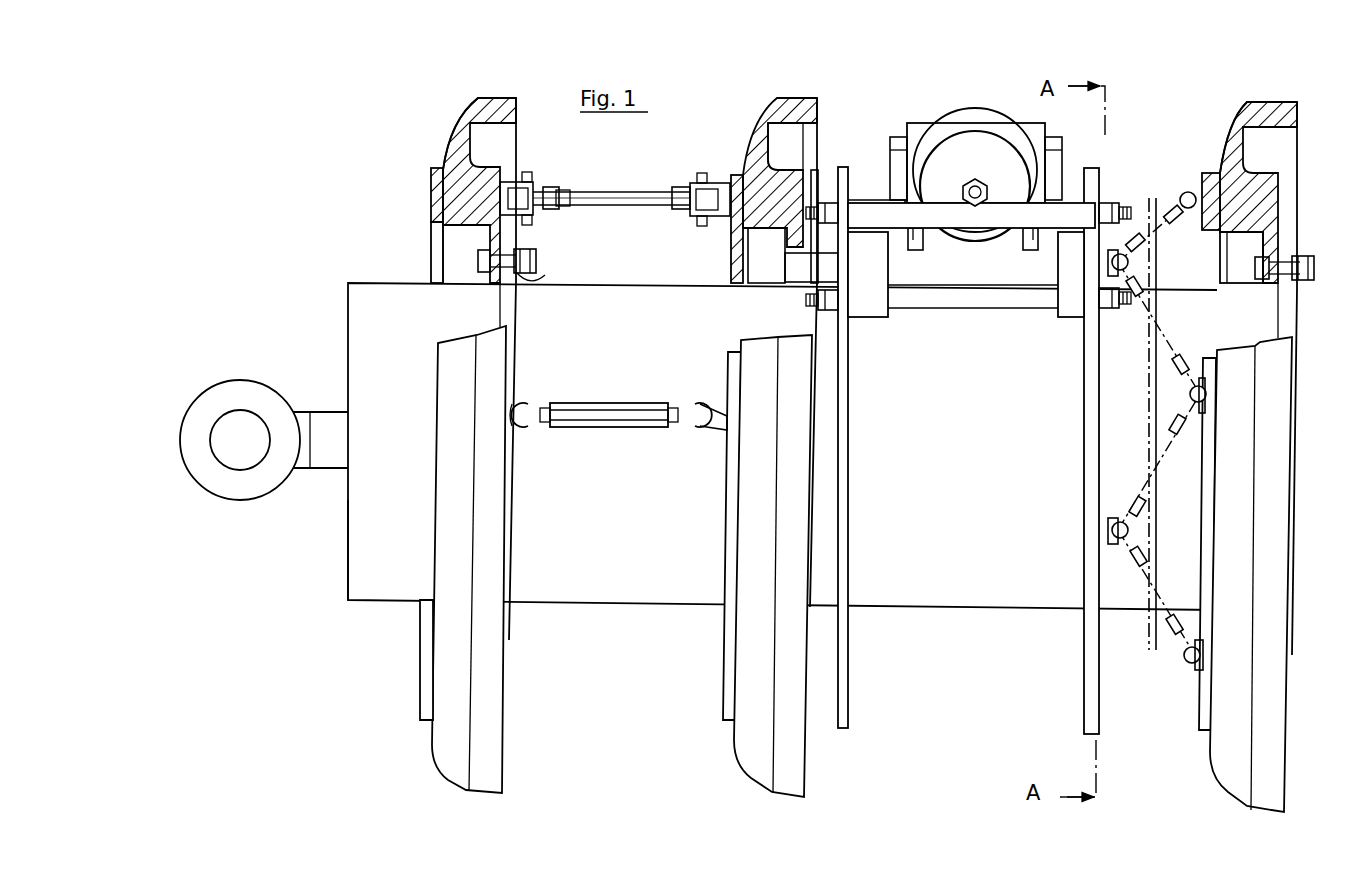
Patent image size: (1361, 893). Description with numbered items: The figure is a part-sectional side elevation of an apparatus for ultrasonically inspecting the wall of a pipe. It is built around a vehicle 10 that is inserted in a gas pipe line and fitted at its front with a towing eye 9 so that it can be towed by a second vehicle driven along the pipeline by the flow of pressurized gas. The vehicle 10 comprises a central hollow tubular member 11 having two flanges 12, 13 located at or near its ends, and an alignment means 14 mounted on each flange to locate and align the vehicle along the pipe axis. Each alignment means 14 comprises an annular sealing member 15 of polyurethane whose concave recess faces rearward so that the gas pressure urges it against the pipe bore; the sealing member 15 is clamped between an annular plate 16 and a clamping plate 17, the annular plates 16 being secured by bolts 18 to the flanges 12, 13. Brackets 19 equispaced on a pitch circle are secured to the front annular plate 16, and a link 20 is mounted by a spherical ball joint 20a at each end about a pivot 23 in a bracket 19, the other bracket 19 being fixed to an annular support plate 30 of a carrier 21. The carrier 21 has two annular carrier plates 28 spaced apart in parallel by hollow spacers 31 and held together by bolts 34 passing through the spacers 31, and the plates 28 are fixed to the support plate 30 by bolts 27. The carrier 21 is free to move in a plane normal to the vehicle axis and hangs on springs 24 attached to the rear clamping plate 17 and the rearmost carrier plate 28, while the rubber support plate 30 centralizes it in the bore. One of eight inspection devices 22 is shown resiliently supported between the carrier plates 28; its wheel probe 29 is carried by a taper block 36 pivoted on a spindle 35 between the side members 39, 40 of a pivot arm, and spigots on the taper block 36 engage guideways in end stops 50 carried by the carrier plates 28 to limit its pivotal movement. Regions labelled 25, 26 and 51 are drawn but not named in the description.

The towing eye 9 is at (262, 398).
The vehicle 10 is at (349, 296).
The central hollow tubular member 11 is at (348, 574).
The flange 12 is at (530, 268).
The flange 13 is at (1296, 258).
The alignment means 14 is at (458, 130).
The annular sealing member 15 is at (488, 106).
The annular plate 16 is at (482, 232).
The clamping plate 17 is at (432, 187).
The bolt 18 is at (478, 262).
The bracket 19 is at (531, 176).
The link 20 is at (622, 192).
The spherical ball joint 20a is at (556, 212).
The carrier 21 is at (971, 157).
The inspection device 22 is at (978, 104).
The pivot 23 is at (692, 188).
The spring 24 is at (1162, 238).
The hub recess 25 is at (805, 175).
The middle wheel 26 is at (795, 102).
The bolt 27 is at (790, 266).
The carrier plate 28 is at (843, 166).
The wheel probe 29 is at (986, 164).
The support plate 30 is at (736, 176).
The hollow spacer 31 is at (1038, 252).
The bolt 34 is at (826, 198).
The spindle 35 is at (994, 186).
The taper block 36 is at (914, 122).
The side member 39 is at (890, 165).
The side member 40 is at (1058, 160).
The end stop 50 is at (862, 317).
The block 51 is at (1060, 317).